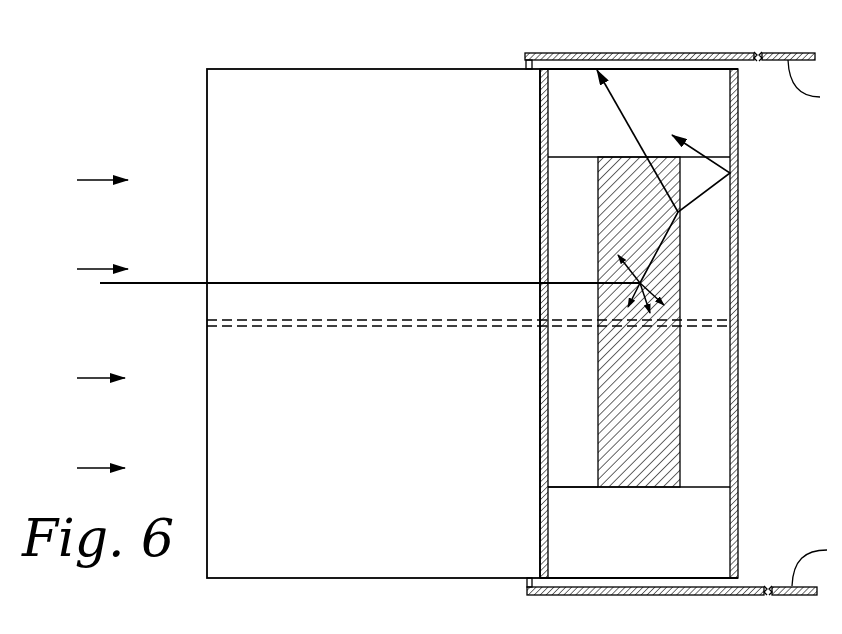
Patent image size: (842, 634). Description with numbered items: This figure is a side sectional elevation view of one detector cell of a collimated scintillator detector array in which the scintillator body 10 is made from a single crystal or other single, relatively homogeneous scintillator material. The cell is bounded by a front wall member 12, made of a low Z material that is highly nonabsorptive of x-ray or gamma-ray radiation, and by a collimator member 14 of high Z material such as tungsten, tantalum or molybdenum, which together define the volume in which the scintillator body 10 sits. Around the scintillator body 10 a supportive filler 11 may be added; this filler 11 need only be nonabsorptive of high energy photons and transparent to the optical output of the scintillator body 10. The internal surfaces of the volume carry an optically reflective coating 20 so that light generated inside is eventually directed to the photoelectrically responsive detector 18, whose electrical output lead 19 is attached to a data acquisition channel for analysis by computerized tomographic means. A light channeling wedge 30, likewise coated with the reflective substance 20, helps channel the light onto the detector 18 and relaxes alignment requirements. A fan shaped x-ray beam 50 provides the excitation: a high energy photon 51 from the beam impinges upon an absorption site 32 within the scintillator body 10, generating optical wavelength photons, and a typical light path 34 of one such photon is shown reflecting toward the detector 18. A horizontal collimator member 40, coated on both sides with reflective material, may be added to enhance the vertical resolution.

The scintillator body 10 is at (625, 160).
The supportive filler 11 is at (567, 488).
The front wall member 12 is at (538, 240).
The collimator member 14 is at (362, 146).
The photoelectrically responsive detector 18 is at (647, 53).
The electrical output lead 19 is at (806, 550).
The optically reflective coating 20 is at (738, 122).
The light channeling wedge 30 is at (652, 543).
The absorption site 32 is at (644, 284).
The light path 34 is at (658, 249).
The horizontal collimator member 40 is at (332, 327).
The x-ray beam 50 is at (96, 181).
The high energy photon 51 is at (315, 284).